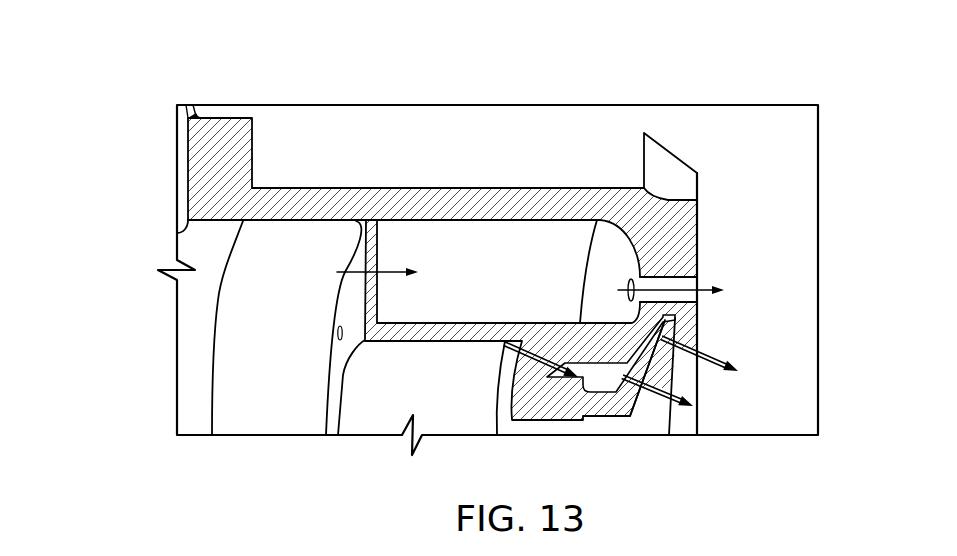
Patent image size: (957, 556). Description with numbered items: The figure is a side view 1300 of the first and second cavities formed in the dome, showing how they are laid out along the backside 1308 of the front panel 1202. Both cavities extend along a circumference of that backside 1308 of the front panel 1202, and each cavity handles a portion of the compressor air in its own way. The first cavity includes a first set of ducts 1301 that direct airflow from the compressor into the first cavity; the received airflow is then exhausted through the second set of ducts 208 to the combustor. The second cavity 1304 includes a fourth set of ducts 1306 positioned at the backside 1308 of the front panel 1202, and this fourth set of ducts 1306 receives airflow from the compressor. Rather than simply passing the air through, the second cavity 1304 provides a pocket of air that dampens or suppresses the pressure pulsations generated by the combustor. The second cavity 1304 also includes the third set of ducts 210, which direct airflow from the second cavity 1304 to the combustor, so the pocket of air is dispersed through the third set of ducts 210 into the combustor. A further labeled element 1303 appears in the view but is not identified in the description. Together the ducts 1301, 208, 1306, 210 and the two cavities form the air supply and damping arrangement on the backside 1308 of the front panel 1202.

The side view 1300 is at (143, 92).
The backside 1308 is at (150, 301).
The fourth set of ducts 1306 is at (370, 265).
The second cavity 1304 is at (563, 214).
The outlet passage 1303 is at (692, 266).
The third set of ducts 210 is at (722, 289).
The second set of ducts 208 is at (697, 362).
The first set of ducts 1301 is at (610, 396).
The front panel 1202 is at (694, 388).